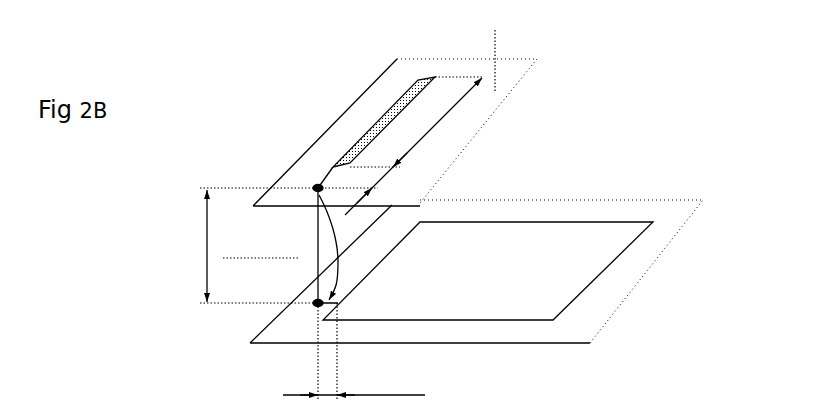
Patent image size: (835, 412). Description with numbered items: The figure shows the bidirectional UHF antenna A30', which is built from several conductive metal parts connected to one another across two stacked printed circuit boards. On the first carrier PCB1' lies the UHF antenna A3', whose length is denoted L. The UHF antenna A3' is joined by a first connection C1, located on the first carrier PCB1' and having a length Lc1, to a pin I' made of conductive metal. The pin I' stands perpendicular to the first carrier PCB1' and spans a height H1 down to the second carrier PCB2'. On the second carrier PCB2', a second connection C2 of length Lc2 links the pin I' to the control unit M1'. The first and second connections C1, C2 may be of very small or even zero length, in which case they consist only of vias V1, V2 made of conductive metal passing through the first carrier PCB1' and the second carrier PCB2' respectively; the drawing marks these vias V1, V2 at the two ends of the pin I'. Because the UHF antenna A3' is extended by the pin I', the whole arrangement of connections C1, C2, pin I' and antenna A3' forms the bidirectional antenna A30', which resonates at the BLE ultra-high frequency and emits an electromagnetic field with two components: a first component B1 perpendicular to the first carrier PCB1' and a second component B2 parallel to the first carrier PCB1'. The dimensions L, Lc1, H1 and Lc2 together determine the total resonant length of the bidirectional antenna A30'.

The bidirectional UHF antenna A30' is at (317, 164).
The UHF antenna A3' is at (382, 96).
The first component B1 is at (508, 58).
The first carrier PCB1' is at (420, 132).
The control unit M1' is at (502, 230).
The second carrier PCB2' is at (476, 282).
The first connection C1 is at (321, 176).
The via V1 is at (314, 186).
The height of pin H1 is at (250, 245).
The second component B2 is at (261, 245).
The pin I' is at (273, 265).
The via V2 is at (316, 306).
The second connection C2 is at (339, 307).
The length of the second connection Lc2 is at (354, 351).
The length of the UHF antenna L is at (414, 146).
The length of the first connection Lc1 is at (362, 177).